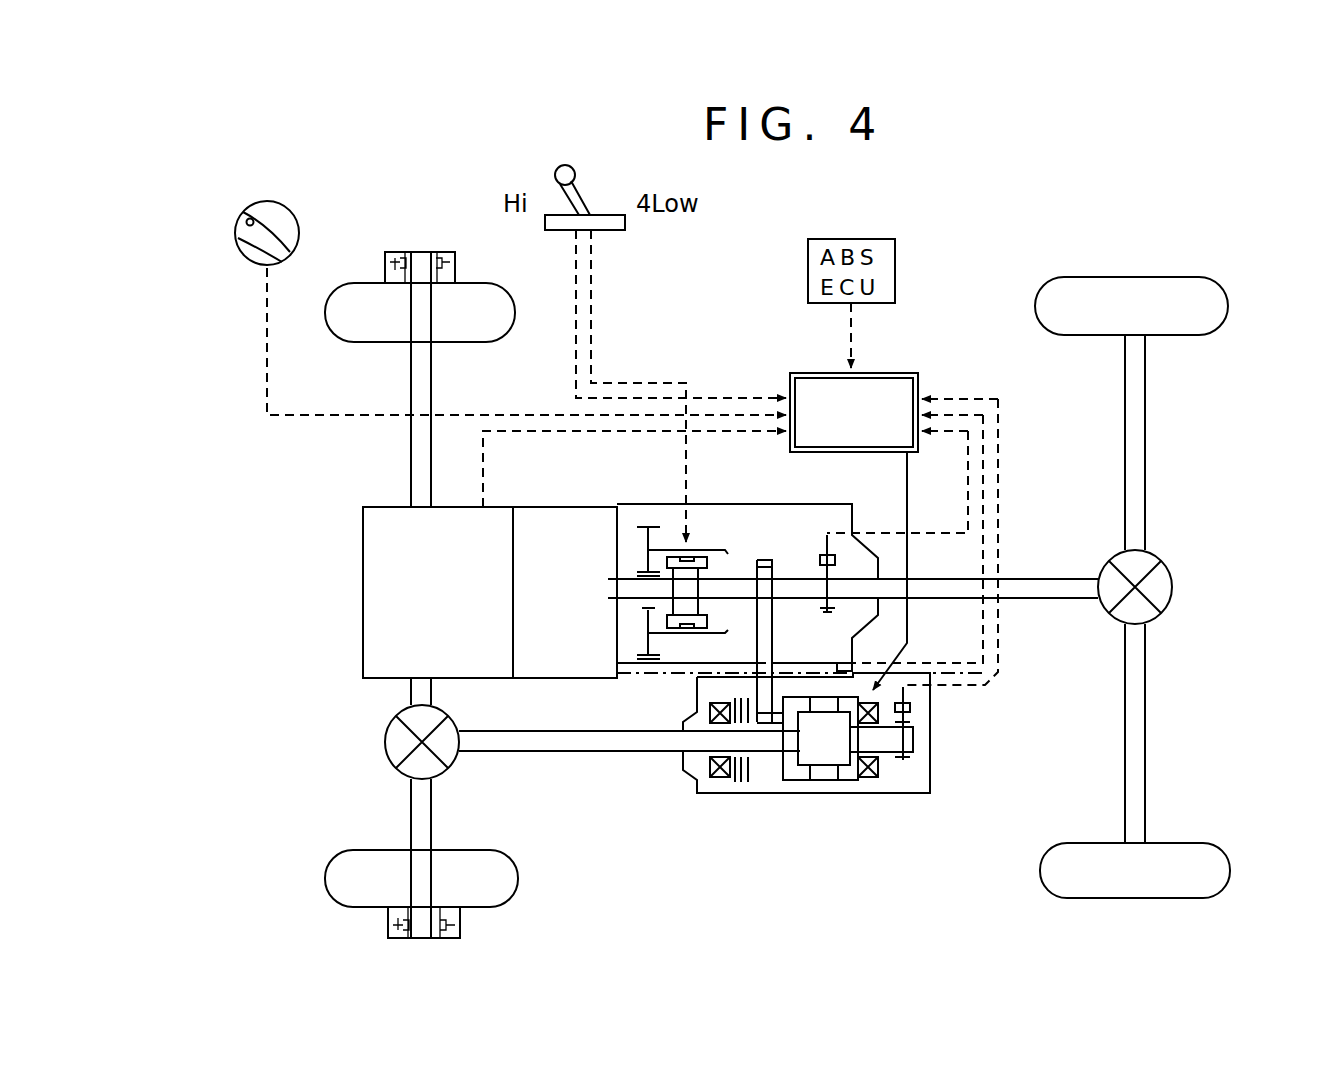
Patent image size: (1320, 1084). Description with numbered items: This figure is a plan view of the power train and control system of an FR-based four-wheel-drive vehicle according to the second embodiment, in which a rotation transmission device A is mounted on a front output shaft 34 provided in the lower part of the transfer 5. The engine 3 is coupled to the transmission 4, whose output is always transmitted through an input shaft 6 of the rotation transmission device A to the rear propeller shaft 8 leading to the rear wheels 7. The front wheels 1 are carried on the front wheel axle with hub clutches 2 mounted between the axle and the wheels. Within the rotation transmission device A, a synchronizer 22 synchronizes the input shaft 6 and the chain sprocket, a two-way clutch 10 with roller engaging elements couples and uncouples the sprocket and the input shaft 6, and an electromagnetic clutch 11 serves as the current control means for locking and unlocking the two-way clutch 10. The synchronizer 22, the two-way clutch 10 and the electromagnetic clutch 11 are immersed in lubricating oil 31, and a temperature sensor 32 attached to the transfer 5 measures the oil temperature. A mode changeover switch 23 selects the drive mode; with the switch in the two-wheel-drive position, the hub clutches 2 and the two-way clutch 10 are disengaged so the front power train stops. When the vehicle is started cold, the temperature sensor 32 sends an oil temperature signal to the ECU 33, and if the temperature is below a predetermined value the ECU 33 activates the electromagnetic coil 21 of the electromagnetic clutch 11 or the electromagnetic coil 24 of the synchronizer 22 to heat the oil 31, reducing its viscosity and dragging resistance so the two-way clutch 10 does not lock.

The front wheels 1 is at (346, 330).
The hub clutches 2 is at (401, 250).
The engine 3 is at (456, 612).
The transmission 4 is at (580, 612).
The transfer 5 is at (711, 500).
The input shaft 6 is at (740, 585).
The rear wheels 7 is at (1130, 290).
The rear propeller shaft 8 is at (1043, 580).
The two-way clutch 10 is at (793, 795).
The electromagnetic clutch 11 is at (880, 784).
The electromagnetic coil 21 is at (880, 765).
The synchronizer 22 is at (725, 795).
The mode changeover switch 23 is at (240, 268).
The electromagnetic coil 24 is at (702, 773).
The lubricating oil 31 is at (807, 670).
The temperature sensor 32 is at (843, 662).
The ECU 33 is at (902, 380).
The front output shaft 34 is at (524, 745).
The rotation transmission device A is at (843, 797).